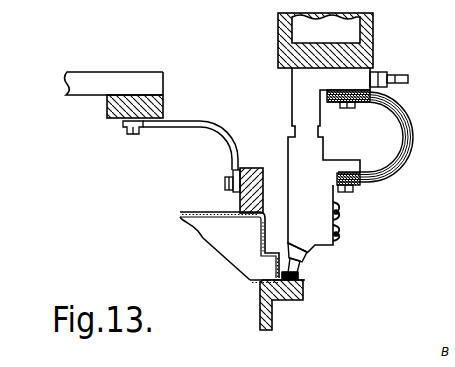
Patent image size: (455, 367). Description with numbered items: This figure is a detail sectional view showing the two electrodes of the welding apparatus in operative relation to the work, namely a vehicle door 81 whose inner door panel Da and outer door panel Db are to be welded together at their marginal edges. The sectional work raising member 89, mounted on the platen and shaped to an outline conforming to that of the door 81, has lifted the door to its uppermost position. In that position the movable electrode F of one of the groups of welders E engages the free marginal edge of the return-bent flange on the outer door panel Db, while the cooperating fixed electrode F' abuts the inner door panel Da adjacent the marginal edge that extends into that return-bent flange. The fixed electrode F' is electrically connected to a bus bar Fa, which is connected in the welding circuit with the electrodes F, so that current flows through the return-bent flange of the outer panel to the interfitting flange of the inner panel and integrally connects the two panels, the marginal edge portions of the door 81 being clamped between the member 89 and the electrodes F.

The door 81 is at (197, 209).
The sectional work raising member 89 is at (274, 314).
The bus bar Fa is at (158, 107).
The cooperating fixed electrode F' is at (245, 162).
The group of welders E is at (340, 217).
The electrode F is at (314, 267).
The inner vehicle door panel Da is at (263, 232).
The outer door panel Db is at (257, 284).